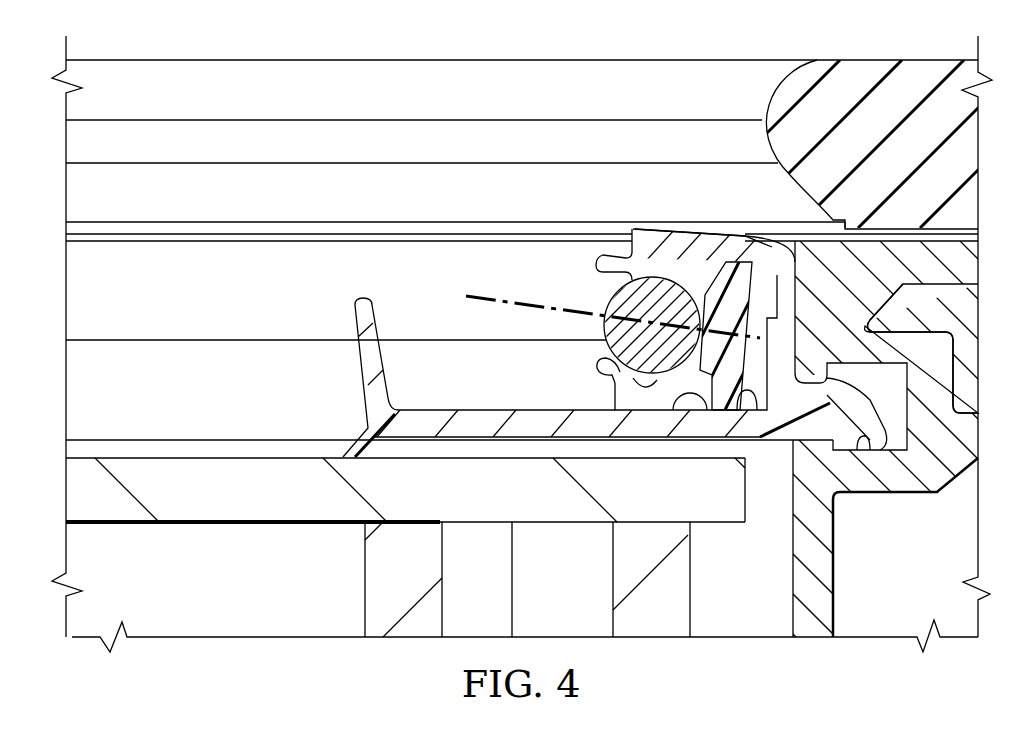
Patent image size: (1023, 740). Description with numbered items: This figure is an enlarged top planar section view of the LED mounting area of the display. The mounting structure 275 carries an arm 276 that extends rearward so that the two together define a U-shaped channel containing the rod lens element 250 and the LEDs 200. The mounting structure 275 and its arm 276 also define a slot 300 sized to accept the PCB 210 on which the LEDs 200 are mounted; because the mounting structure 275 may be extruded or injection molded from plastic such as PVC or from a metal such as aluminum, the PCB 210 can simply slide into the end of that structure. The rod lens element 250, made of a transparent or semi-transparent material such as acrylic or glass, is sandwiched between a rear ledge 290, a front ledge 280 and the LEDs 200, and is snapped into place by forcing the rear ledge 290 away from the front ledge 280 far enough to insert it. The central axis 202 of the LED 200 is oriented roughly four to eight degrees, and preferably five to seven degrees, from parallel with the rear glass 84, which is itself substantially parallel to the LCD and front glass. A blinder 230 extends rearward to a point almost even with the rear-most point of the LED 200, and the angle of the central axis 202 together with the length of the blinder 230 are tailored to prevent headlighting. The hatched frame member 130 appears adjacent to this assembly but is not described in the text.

The rear glass 84 is at (200, 522).
The side wall 130 is at (697, 178).
The LED 200 is at (572, 312).
The central axis 202 is at (466, 296).
The PCB 210 is at (788, 291).
The blinder 230 is at (358, 360).
The rod lens element 250 is at (614, 292).
The mounting structure 275 is at (483, 417).
The arm 276 is at (665, 240).
The front ledge 280 is at (604, 363).
The rear ledge 290 is at (623, 258).
The slot 300 is at (800, 268).